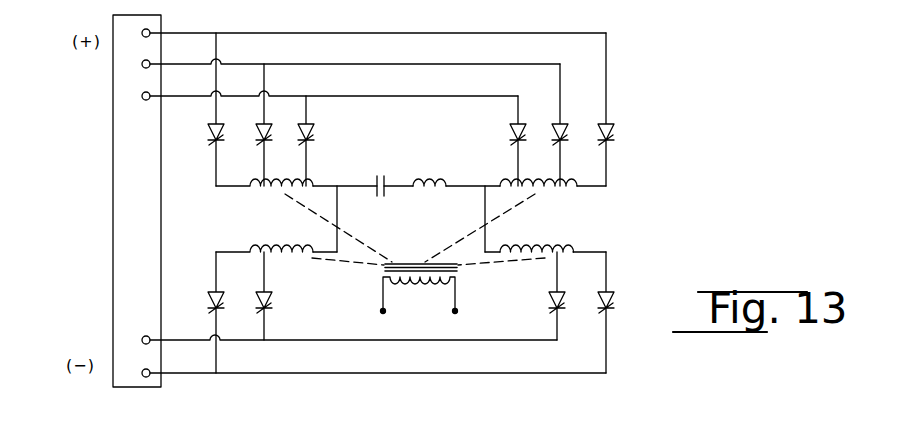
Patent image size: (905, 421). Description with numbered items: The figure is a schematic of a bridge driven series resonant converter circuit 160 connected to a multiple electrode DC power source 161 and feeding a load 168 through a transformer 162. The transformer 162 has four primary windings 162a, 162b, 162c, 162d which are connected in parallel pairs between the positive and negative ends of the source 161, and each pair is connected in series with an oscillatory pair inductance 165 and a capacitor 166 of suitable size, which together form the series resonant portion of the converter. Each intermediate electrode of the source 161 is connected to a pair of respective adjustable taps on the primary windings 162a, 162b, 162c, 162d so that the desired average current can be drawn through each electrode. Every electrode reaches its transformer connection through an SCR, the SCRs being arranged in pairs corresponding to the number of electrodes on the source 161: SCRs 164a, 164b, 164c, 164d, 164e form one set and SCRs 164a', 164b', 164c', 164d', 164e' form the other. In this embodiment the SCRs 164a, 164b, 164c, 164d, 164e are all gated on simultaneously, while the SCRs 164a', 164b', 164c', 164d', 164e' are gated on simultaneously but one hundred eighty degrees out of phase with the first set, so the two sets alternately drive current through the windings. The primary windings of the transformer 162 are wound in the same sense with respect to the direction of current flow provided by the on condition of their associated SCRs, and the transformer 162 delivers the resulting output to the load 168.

The bridge driven series resonant converter circuit 160 is at (695, 47).
The multiple electrode DC power source 161 is at (113, 202).
The transformer 162 is at (378, 272).
The primary winding 162a is at (245, 190).
The primary winding 162b is at (570, 192).
The primary winding 162c is at (247, 251).
The primary winding 162d is at (575, 250).
The SCR 164a is at (250, 109).
The SCR 164b is at (634, 312).
The SCR 164c is at (304, 125).
The SCR 164d is at (340, 141).
The SCR 164e is at (521, 296).
The SCR 164a' is at (649, 109).
The SCR 164b' is at (134, 312).
The SCR 164c' is at (531, 114).
The SCR 164d' is at (488, 129).
The SCR 164e' is at (302, 310).
The oscillatory pair inductance 165 is at (437, 183).
The capacitor 166 is at (383, 180).
The load 168 is at (383, 313).